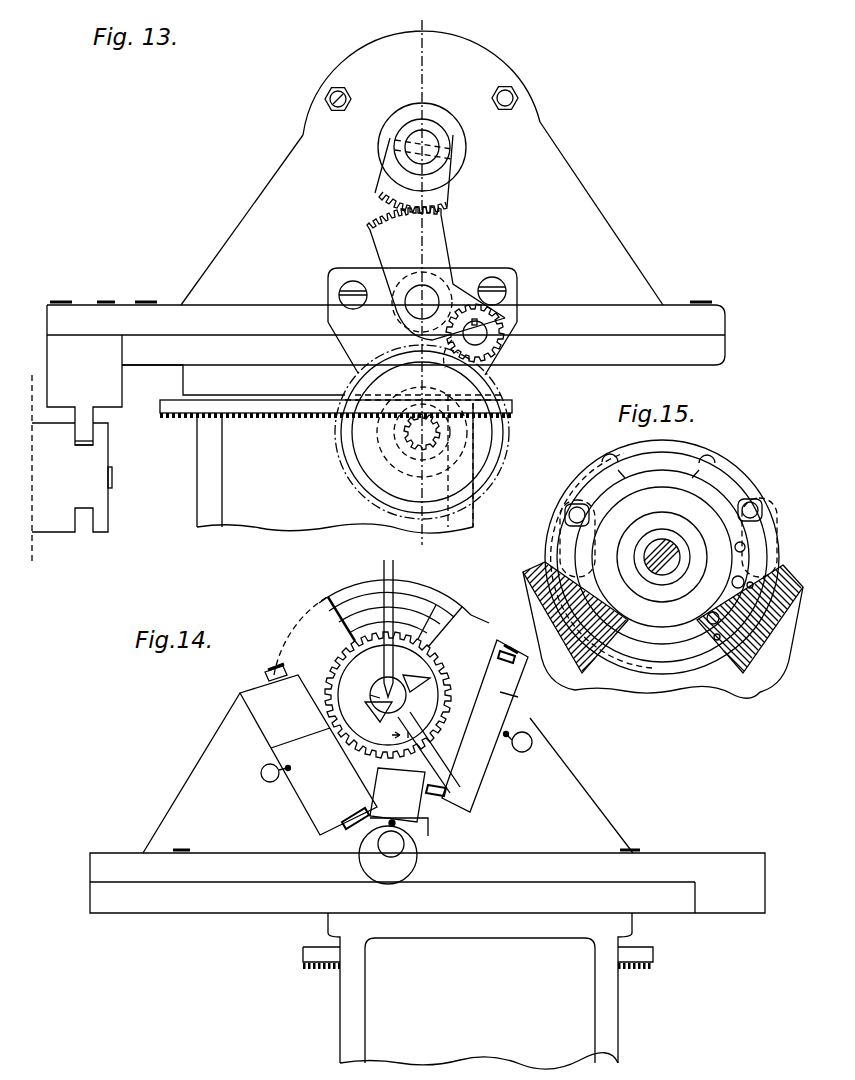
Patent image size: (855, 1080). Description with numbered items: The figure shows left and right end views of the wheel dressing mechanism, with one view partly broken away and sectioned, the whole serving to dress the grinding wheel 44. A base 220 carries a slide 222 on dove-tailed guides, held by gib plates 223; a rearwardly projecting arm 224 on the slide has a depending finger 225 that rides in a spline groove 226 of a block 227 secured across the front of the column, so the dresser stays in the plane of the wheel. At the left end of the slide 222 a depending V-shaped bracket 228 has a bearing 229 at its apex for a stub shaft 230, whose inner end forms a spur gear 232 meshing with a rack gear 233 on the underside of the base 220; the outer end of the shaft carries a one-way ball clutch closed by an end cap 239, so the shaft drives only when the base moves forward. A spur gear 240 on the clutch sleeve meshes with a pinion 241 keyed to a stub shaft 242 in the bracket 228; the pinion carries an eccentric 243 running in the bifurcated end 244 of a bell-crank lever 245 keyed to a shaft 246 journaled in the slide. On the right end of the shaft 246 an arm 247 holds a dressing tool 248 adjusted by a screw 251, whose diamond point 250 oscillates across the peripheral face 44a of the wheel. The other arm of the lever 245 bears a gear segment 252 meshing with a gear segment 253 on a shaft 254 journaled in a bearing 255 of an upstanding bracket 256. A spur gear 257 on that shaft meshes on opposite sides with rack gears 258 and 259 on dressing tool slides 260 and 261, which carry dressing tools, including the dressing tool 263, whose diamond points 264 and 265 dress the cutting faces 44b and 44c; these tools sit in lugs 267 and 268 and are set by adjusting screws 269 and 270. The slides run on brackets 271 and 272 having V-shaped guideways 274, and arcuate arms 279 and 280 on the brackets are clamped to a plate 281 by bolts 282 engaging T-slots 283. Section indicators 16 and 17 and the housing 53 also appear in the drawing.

In FIG. 13, the section line 16 is at (438, 27).
In FIG. 14, the section line 17 is at (432, 793).
In FIG. 14, the grinding wheel 44 is at (384, 568).
In FIG. 14, the peripheral face 44a is at (378, 587).
In FIG. 14, the cutting face 44b is at (383, 574).
In FIG. 14, the cutting face 44c is at (400, 579).
In FIG. 13, the housing 53 is at (607, 208).
In FIG. 14, the housing 53 is at (319, 613).
In FIG. 13, the base 220 is at (237, 515).
In FIG. 14, the base 220 is at (600, 1022).
In FIG. 13, the slide 222 is at (650, 285).
In FIG. 14, the slide 222 is at (647, 855).
In FIG. 13, the gib plates 223 is at (725, 352).
In FIG. 14, the gib plates 223 is at (392, 917).
In FIG. 13, the rearwardly projecting arm 224 is at (63, 352).
In FIG. 14, the rearwardly projecting arm 224 is at (719, 897).
In FIG. 13, the depending finger 225 is at (85, 433).
In FIG. 13, the spline groove 226 is at (85, 450).
In FIG. 13, the block 227 is at (92, 492).
In FIG. 13, the V-shaped bracket 228 is at (352, 342).
In FIG. 13, the bearing 229 is at (502, 443).
In FIG. 13, the stub shaft 230 is at (352, 466).
In FIG. 13, the spur gear 232 is at (343, 440).
In FIG. 13, the rack gear 233 is at (283, 417).
In FIG. 14, the rack gear 233 is at (647, 953).
In FIG. 13, the end cap 239 is at (487, 433).
In FIG. 13, the spur gear 240 is at (497, 383).
In FIG. 13, the pinion 241 is at (488, 330).
In FIG. 13, the stub shaft 242 is at (492, 322).
In FIG. 13, the eccentric 243 is at (500, 316).
In FIG. 13, the bifurcated end 244 is at (472, 284).
In FIG. 13, the bell-crank lever 245 is at (445, 268).
In FIG. 13, the shaft 246 is at (415, 285).
In FIG. 14, the shaft 246 is at (388, 862).
In FIG. 14, the arm 247 is at (410, 838).
In FIG. 14, the dressing tool 248 is at (422, 745).
In FIG. 14, the diamond point 250 is at (386, 745).
In FIG. 14, the screw 251 is at (393, 843).
In FIG. 13, the gear segment 252 is at (438, 230).
In FIG. 13, the gear segment 253 is at (442, 195).
In FIG. 13, the shaft 254 is at (437, 138).
In FIG. 14, the shaft 254 is at (383, 692).
In FIG. 15, the shaft 254 is at (673, 550).
In FIG. 13, the bearing 255 is at (432, 123).
In FIG. 13, the upstanding bracket 256 is at (492, 62).
In FIG. 14, the upstanding bracket 256 is at (200, 790).
In FIG. 14, the spur gear 257 is at (423, 645).
In FIG. 14, the rack gear 258 is at (330, 677).
In FIG. 14, the rack gear 259 is at (520, 640).
In FIG. 14, the dressing tool slide 260 is at (277, 675).
In FIG. 14, the dressing tool slide 261 is at (537, 695).
In FIG. 14, the dressing tool 263 is at (394, 725).
In FIG. 14, the diamond point 264 is at (262, 677).
In FIG. 14, the diamond point 265 is at (398, 678).
In FIG. 14, the lug 267 is at (312, 792).
In FIG. 14, the lug 268 is at (500, 753).
In FIG. 14, the adjusting screw 269 is at (260, 777).
In FIG. 14, the adjusting screw 270 is at (532, 742).
In FIG. 14, the bracket 271 is at (312, 813).
In FIG. 15, the bracket 271 is at (590, 650).
In FIG. 14, the bracket 272 is at (477, 790).
In FIG. 15, the bracket 272 is at (770, 653).
In FIG. 14, the V-shaped guideways 274 is at (518, 688).
In FIG. 14, the arcuate arm 279 is at (300, 632).
In FIG. 15, the arcuate arm 279 is at (578, 563).
In FIG. 14, the arcuate arm 280 is at (450, 605).
In FIG. 15, the arcuate arm 280 is at (747, 478).
In FIG. 14, the plate 281 is at (427, 593).
In FIG. 15, the plate 281 is at (717, 452).
In FIG. 13, the bolts 282 is at (345, 92).
In FIG. 15, the bolts 282 is at (570, 508).
In FIG. 15, the T-slot 283 is at (617, 458).